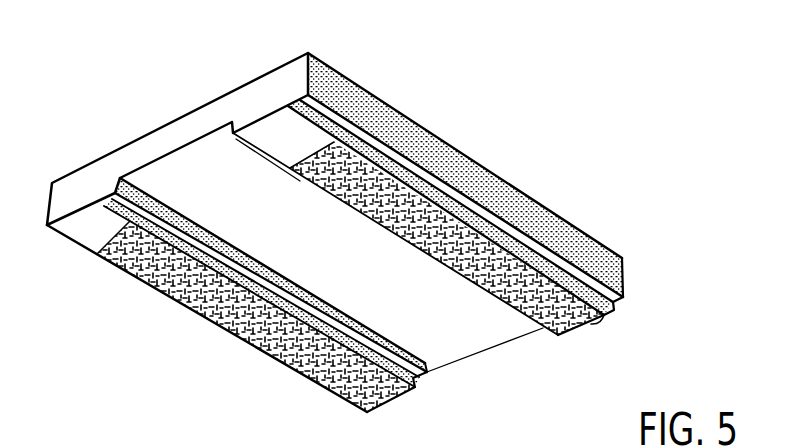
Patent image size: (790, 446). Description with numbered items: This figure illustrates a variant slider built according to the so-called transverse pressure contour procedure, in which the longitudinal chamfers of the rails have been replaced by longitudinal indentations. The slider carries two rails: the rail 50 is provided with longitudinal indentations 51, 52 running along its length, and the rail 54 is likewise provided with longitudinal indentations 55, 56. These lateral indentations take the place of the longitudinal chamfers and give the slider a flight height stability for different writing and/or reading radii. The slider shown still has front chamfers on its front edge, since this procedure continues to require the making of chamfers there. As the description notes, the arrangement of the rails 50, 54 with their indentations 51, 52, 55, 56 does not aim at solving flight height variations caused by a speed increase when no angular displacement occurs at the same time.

The rail 50 is at (450, 238).
The longitudinal indentation 51 is at (608, 258).
The longitudinal indentation 52 is at (613, 318).
The rail 54 is at (195, 287).
The longitudinal indentation 55 is at (255, 352).
The longitudinal indentation 56 is at (356, 343).